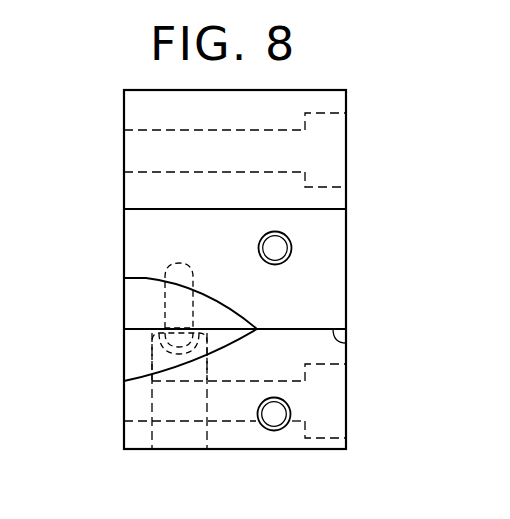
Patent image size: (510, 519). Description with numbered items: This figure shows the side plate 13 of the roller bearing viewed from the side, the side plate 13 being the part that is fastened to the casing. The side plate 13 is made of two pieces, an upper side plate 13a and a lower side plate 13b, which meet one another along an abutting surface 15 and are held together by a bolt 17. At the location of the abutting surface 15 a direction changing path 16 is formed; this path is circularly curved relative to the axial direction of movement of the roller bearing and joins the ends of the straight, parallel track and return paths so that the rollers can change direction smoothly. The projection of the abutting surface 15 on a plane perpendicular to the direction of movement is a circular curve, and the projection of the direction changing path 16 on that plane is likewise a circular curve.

The side plate 13 is at (349, 241).
The upper side plate 13a is at (146, 236).
The lower side plate 13b is at (134, 437).
The abutting surface 15 is at (346, 343).
The direction changing path 16 is at (135, 358).
The bolt 17 is at (165, 307).